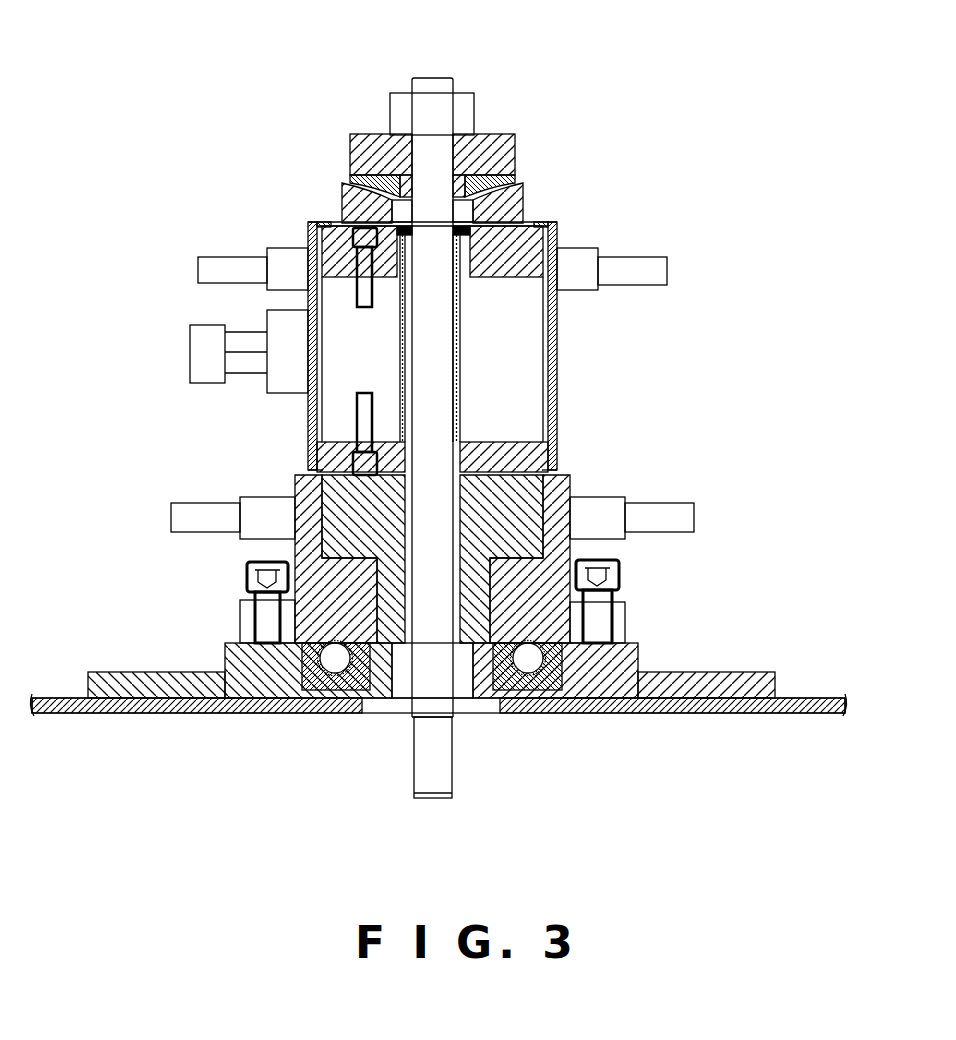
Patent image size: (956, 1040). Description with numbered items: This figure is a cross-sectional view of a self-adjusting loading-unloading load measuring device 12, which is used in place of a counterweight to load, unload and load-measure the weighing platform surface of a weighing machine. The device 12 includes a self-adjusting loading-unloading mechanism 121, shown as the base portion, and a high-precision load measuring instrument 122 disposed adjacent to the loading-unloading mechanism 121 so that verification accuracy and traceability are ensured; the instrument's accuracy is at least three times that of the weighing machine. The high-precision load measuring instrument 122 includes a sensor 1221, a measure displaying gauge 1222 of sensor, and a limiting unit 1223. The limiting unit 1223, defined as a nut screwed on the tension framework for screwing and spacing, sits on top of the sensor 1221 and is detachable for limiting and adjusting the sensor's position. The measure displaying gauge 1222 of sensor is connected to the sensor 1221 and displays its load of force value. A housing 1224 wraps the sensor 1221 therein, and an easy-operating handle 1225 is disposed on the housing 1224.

The self-adjusting loading-unloading load measuring device 12 is at (438, 410).
The self-adjusting loading-unloading mechanism 121 is at (355, 535).
The high-precision load measuring instrument 122 is at (348, 292).
The sensor 1221 is at (355, 340).
The measure displaying gauge of sensor 1222 is at (205, 360).
The limiting unit 1223 is at (407, 110).
The housing 1224 is at (330, 440).
The easy-operating handle 1225 is at (213, 267).